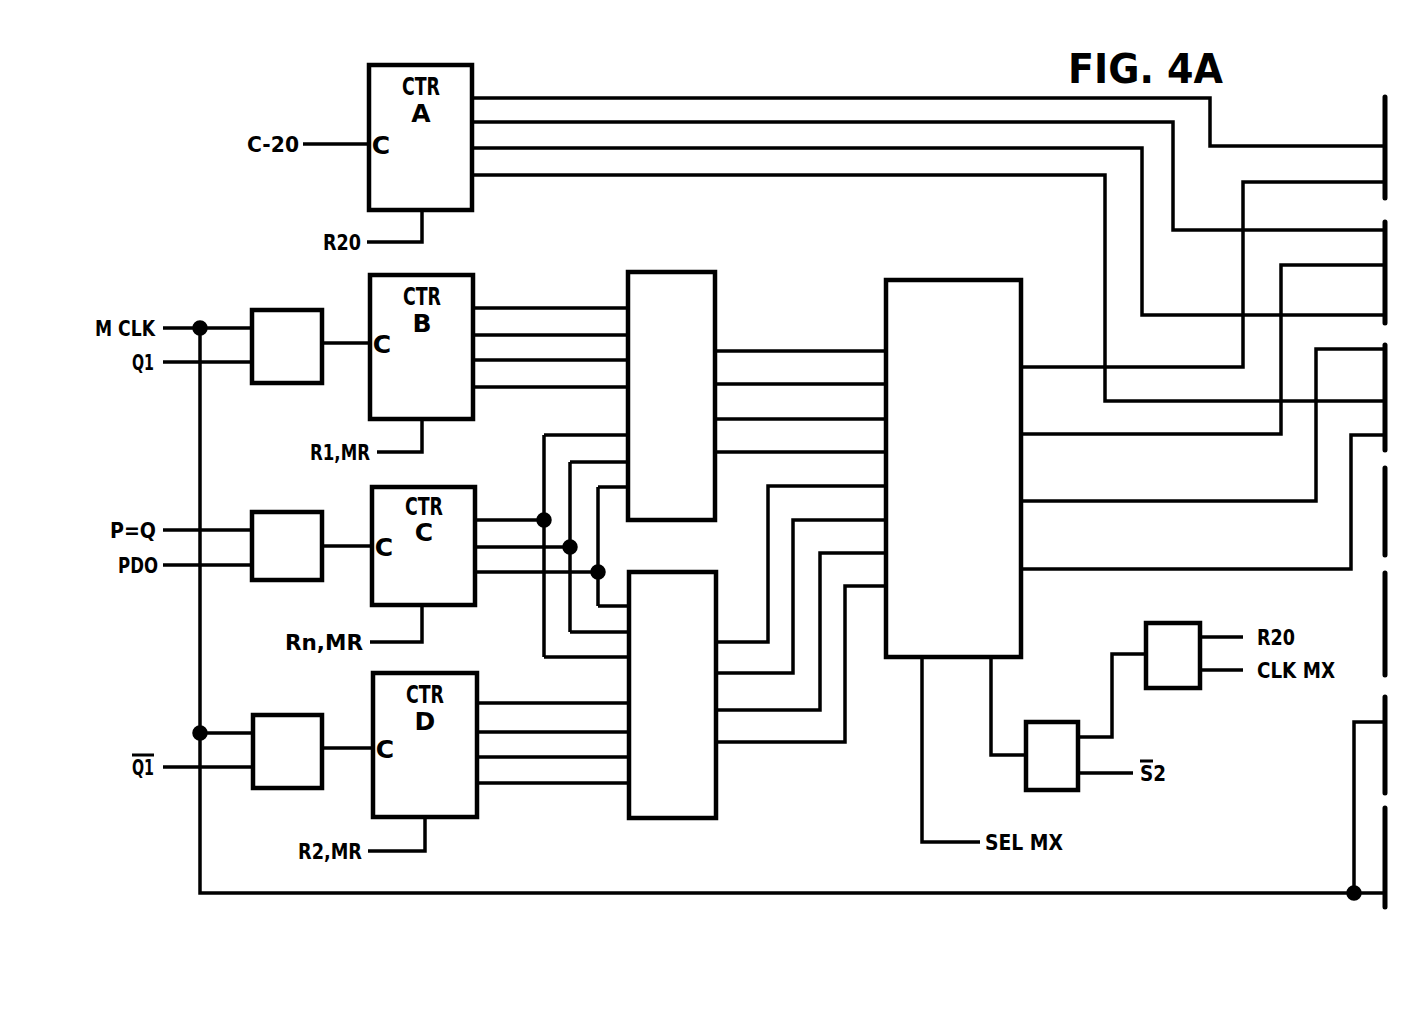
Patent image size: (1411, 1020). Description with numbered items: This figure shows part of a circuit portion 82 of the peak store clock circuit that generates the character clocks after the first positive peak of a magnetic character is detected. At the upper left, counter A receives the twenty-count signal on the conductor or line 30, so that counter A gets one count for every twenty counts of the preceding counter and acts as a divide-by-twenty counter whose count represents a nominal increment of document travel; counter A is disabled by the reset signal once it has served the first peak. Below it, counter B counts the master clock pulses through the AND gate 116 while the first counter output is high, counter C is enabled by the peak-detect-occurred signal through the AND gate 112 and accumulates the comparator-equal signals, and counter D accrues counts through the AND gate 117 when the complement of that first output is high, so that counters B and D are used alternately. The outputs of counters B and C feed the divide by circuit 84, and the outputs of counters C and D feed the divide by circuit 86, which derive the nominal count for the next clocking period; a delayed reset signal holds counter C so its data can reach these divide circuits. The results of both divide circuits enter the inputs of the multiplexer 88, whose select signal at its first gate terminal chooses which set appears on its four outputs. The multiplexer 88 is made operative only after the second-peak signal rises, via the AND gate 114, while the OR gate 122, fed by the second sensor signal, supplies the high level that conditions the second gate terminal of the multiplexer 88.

The conductor or line 30 is at (334, 144).
The circuit portion 82 is at (798, 80).
The divide by circuit 84 is at (662, 285).
The divide by circuit 86 is at (707, 795).
The multiplexer 88 is at (941, 283).
The AND gate 112 is at (276, 518).
The AND gate 114 is at (1161, 630).
The AND gate 116 is at (291, 312).
The AND gate 117 is at (288, 722).
The OR gate 122 is at (1043, 730).